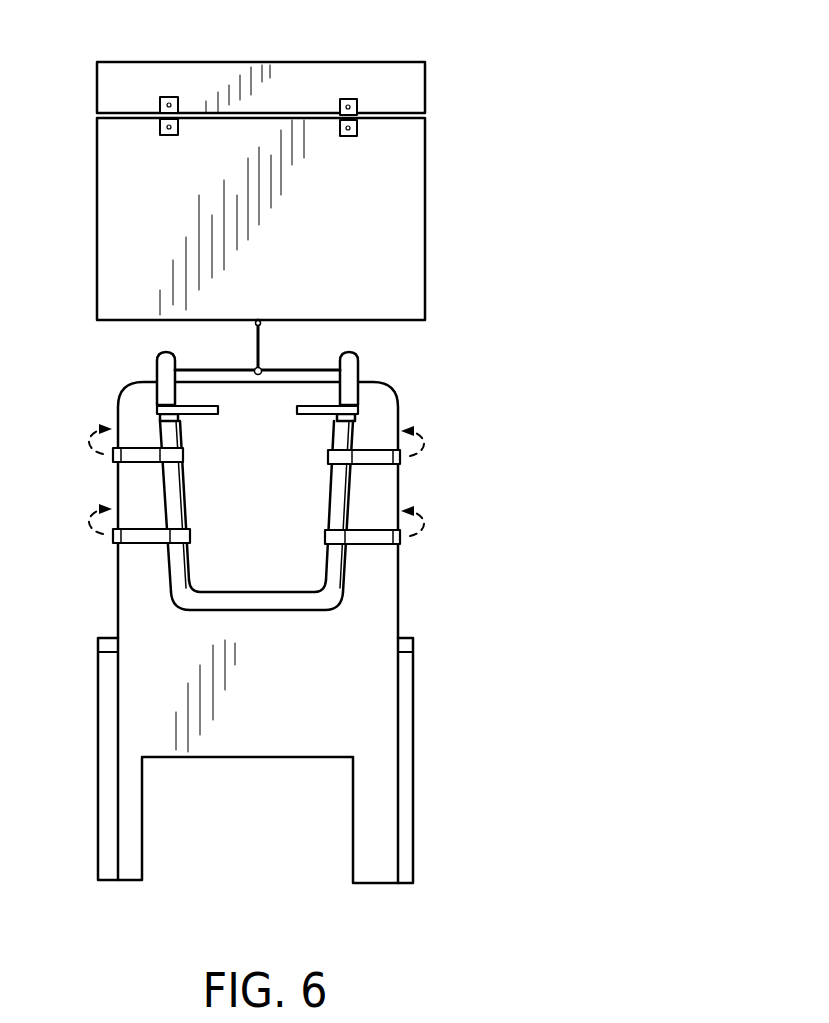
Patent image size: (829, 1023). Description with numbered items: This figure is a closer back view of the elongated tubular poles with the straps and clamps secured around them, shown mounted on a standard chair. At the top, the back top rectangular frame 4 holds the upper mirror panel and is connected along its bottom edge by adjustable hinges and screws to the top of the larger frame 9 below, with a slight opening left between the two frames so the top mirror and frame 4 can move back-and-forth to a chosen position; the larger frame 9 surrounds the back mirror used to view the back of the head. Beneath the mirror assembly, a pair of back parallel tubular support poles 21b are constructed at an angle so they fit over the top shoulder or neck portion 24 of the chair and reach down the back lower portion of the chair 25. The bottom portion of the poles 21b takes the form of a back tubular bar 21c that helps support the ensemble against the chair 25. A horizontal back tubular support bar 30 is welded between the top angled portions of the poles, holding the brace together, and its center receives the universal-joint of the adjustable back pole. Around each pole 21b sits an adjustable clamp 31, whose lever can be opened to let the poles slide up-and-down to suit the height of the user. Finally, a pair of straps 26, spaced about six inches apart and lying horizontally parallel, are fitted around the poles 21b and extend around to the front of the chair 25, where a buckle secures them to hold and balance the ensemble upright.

The back top rectangular frame 4 is at (338, 89).
The larger frame 9 is at (363, 140).
The back parallel tubular support poles 21b is at (350, 438).
The back tubular bar 21c is at (288, 602).
The top shoulder or neck portion of the chair 24 is at (125, 392).
The chair 25 is at (178, 498).
The straps 26 is at (127, 458).
The horizontal back tubular support bar 30 is at (226, 372).
The adjustable clamps 31 is at (193, 397).